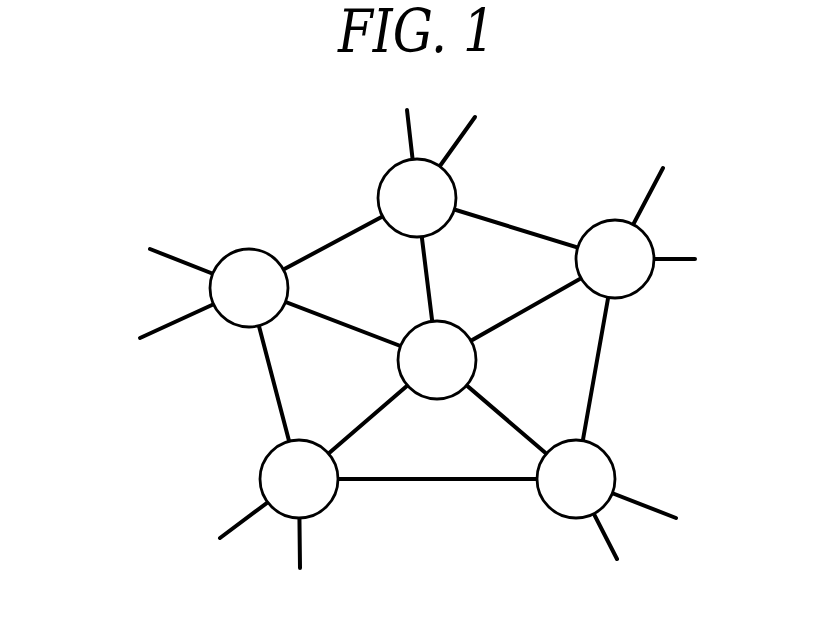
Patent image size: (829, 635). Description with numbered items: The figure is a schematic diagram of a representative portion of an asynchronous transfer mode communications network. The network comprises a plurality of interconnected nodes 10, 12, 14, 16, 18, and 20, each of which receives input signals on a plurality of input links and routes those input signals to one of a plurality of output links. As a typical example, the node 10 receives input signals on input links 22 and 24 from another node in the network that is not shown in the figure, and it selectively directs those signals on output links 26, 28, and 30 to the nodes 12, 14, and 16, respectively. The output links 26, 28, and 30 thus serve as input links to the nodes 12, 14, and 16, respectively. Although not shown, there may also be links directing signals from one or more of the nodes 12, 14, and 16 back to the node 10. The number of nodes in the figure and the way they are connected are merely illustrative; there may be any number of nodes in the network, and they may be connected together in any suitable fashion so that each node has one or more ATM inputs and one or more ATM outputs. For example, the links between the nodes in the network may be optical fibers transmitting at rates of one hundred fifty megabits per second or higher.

The node 10 is at (238, 309).
The node 12 is at (406, 219).
The node 14 is at (426, 381).
The node 16 is at (288, 500).
The node 18 is at (604, 280).
The node 20 is at (565, 500).
The input link 22 is at (170, 257).
The input link 24 is at (152, 333).
The output link 26 is at (309, 254).
The output link 28 is at (360, 324).
The output link 30 is at (281, 403).